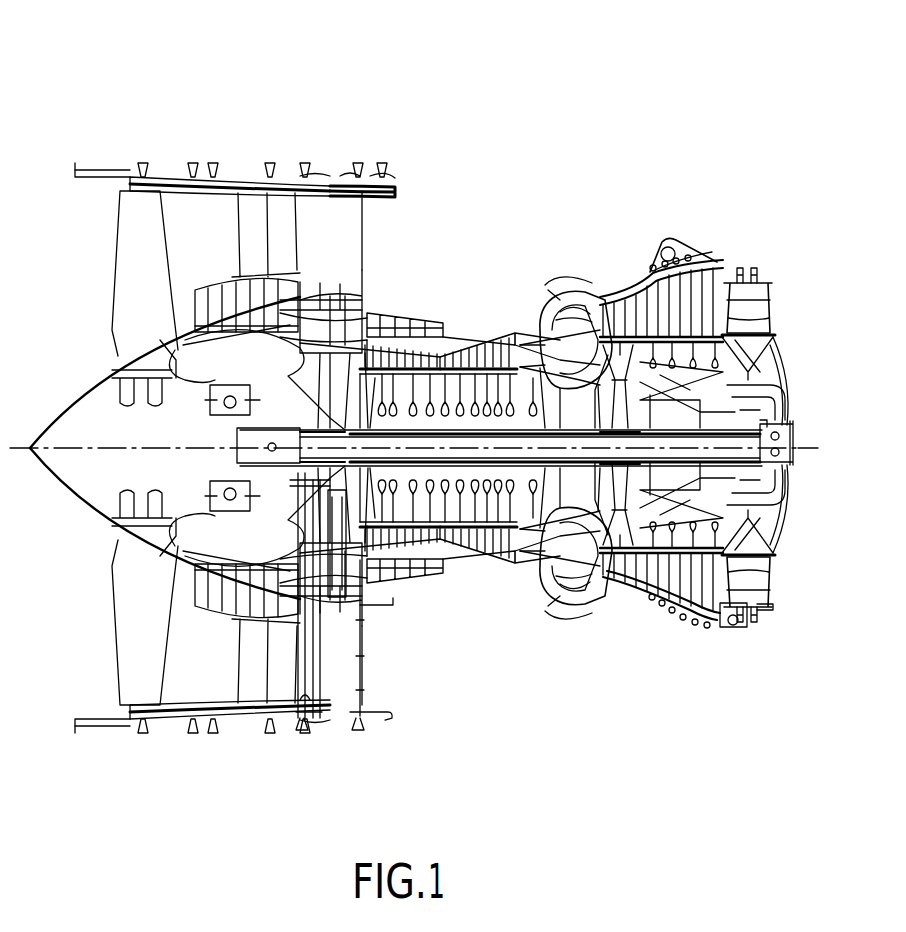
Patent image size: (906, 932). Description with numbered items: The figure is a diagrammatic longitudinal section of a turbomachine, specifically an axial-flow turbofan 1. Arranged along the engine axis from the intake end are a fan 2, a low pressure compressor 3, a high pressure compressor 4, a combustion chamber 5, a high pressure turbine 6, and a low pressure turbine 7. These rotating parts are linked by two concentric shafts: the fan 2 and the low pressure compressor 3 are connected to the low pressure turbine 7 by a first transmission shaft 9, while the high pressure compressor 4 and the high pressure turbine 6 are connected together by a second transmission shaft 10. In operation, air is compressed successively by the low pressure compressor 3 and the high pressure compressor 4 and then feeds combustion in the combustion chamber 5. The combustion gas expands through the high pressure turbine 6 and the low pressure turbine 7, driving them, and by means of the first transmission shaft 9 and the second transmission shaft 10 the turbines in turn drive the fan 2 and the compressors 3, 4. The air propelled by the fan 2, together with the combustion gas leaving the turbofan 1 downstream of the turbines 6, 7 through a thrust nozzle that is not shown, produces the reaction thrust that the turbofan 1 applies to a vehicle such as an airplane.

The axial-flow turbofan 1 is at (599, 90).
The fan 2 is at (238, 165).
The low pressure compressor 3 is at (220, 272).
The high pressure compressor 4 is at (457, 333).
The combustion chamber 5 is at (585, 300).
The high pressure turbine 6 is at (621, 283).
The low pressure turbine 7 is at (690, 240).
The first transmission shaft 9 is at (557, 500).
The second transmission shaft 10 is at (556, 414).